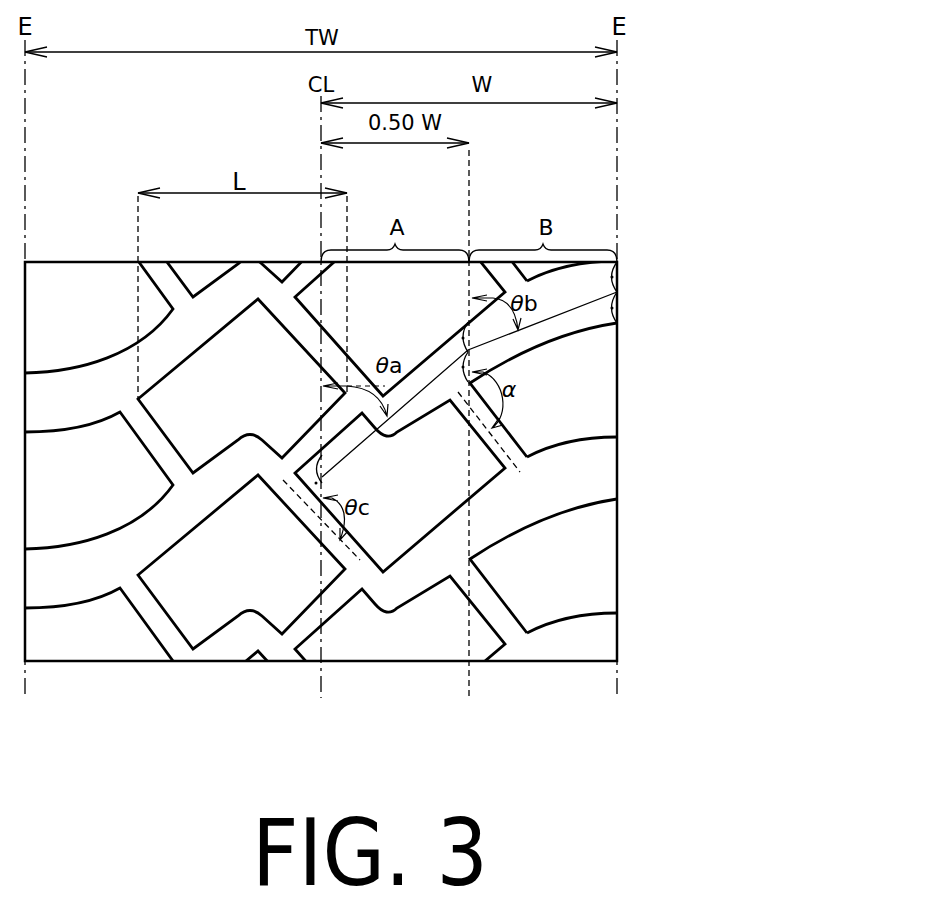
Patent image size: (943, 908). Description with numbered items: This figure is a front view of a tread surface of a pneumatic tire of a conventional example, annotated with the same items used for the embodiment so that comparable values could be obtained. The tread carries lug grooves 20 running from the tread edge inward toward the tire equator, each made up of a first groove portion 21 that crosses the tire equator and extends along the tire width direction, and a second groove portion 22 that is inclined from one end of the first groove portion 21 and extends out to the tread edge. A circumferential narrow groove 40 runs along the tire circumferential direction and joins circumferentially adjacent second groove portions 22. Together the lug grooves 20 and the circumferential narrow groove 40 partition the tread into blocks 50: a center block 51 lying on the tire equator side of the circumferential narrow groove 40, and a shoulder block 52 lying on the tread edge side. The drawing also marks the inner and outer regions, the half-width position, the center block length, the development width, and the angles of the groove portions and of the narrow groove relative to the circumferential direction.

The lug groove 20 is at (377, 474).
The first groove portion 21 is at (308, 519).
The second groove portion 22 is at (488, 515).
The circumferential narrow groove 40 is at (167, 637).
The block 50 is at (509, 447).
The center block 51 is at (357, 653).
The shoulder block 52 is at (605, 602).